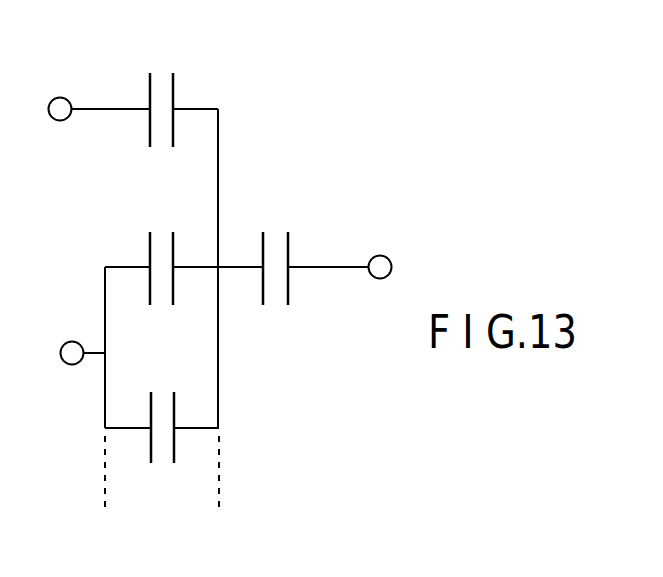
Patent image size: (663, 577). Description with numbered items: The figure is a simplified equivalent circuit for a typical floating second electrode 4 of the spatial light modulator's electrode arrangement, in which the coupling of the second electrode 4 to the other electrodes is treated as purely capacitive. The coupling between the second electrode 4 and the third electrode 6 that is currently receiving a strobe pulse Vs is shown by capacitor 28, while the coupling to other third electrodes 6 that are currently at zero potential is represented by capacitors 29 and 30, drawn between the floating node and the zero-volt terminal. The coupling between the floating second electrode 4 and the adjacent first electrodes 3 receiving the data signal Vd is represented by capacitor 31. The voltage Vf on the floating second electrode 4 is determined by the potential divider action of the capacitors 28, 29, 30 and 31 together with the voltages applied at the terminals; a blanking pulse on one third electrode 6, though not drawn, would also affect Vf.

The first electrode 3 is at (345, 277).
The second electrode 4 is at (223, 210).
The third electrode 6 is at (103, 115).
The capacitor 28 is at (180, 73).
The capacitor 29 is at (175, 238).
The capacitor 30 is at (182, 402).
The capacitor 31 is at (263, 295).